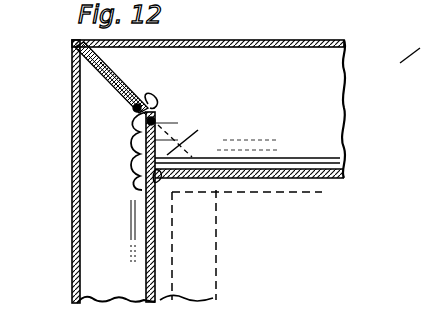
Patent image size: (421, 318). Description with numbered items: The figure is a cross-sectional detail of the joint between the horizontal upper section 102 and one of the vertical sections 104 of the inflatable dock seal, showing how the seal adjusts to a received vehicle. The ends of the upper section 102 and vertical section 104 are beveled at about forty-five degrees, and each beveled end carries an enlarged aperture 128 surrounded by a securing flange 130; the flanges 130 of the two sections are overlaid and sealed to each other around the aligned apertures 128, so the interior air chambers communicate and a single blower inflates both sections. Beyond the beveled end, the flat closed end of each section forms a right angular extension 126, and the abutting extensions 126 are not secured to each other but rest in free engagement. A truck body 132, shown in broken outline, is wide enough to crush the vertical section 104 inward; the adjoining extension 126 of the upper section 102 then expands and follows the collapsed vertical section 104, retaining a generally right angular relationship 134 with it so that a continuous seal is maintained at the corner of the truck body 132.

The horizontal upper section 102 is at (294, 39).
The vertical section 104 is at (70, 253).
The right angular extension 126 is at (231, 123).
The aperture 128 is at (120, 90).
The securing flange 130 is at (142, 117).
The truck body 132 is at (160, 258).
The right angular relationship 134 is at (147, 193).